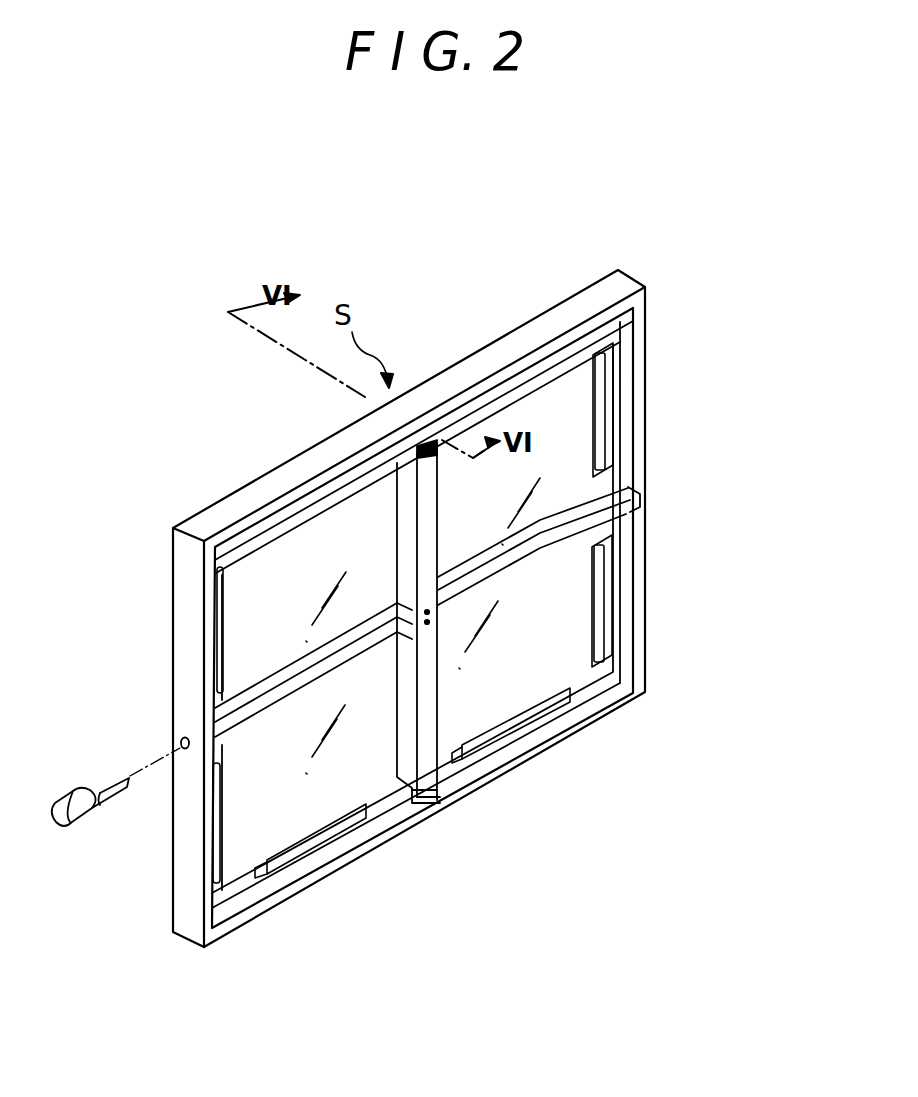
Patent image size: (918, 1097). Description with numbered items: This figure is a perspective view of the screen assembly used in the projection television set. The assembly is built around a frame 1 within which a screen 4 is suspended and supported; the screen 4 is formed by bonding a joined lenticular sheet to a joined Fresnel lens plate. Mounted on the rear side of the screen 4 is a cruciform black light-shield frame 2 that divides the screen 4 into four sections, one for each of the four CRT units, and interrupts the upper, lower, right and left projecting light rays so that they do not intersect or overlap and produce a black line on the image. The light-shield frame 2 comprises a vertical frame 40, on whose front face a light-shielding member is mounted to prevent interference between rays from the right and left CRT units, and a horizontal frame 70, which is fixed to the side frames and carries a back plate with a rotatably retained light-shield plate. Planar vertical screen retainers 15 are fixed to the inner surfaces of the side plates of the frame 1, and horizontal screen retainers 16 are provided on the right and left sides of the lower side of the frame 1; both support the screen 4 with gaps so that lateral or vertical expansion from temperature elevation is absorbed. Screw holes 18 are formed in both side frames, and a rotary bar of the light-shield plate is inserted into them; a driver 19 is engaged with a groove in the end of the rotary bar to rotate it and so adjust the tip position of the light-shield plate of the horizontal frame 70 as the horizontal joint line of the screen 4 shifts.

The frame 1 is at (647, 533).
The cruciform black light-shield frame 2 is at (444, 534).
The screen 4 is at (252, 586).
The vertical screen retainer 15 is at (602, 398).
The horizontal screen retainer 16 is at (323, 830).
The screw hole 18 is at (185, 749).
The driver 19 is at (82, 822).
The vertical frame 40 is at (427, 445).
The horizontal frame 70 is at (560, 544).